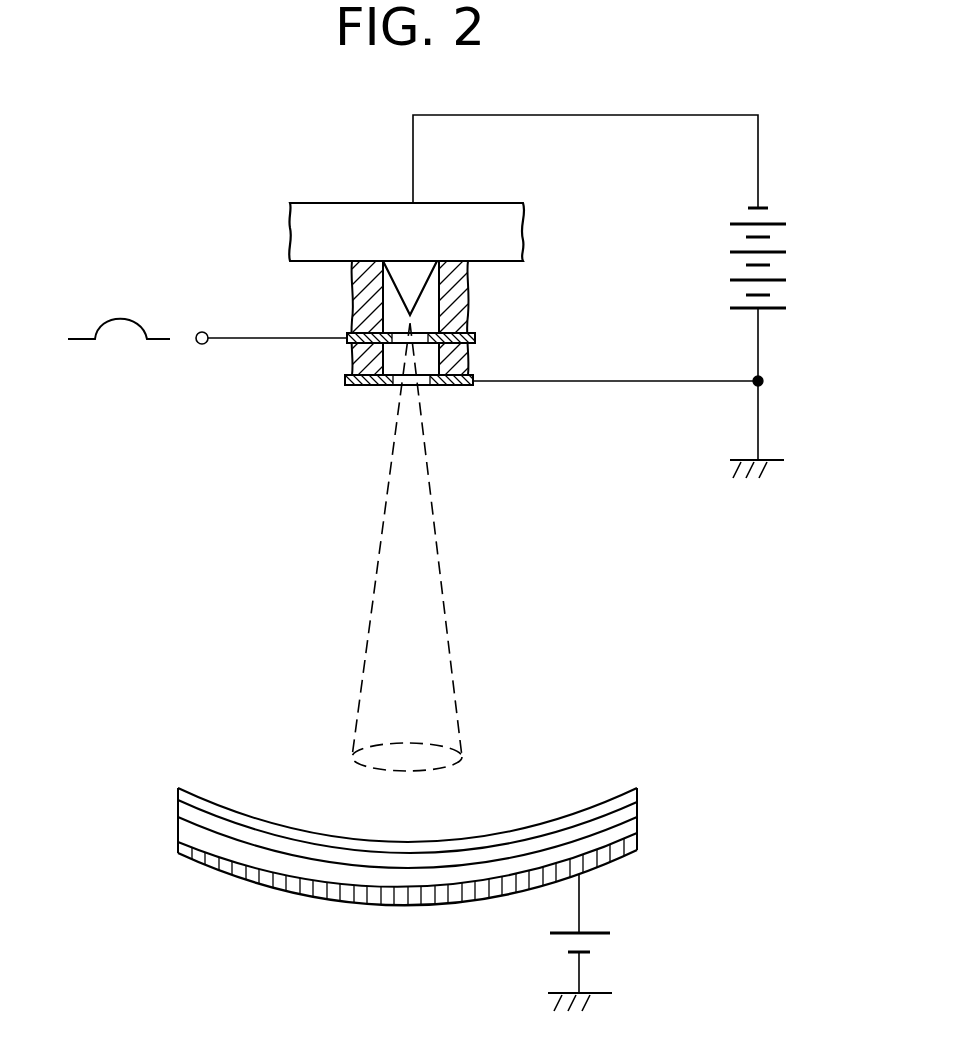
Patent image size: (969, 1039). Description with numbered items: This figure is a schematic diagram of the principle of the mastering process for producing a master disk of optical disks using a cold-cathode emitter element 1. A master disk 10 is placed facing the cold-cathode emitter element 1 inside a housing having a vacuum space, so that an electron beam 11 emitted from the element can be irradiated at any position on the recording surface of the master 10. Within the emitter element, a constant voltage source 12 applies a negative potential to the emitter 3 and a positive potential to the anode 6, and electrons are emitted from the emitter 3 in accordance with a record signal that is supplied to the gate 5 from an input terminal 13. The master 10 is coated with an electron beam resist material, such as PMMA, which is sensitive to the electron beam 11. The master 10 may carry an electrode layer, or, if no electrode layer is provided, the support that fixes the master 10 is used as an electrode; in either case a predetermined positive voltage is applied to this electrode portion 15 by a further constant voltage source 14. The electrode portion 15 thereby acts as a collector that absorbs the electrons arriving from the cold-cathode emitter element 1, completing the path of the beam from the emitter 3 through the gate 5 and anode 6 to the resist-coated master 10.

The cold-cathode emitter element 1 is at (538, 219).
The emitter 3 is at (421, 286).
The gate 5 is at (347, 336).
The anode 6 is at (474, 378).
The master disk 10 is at (615, 788).
The electron beam 11 is at (440, 648).
The constant voltage source 12 is at (790, 246).
The input terminal 13 is at (202, 331).
The constant voltage source 14 is at (610, 950).
The electrode portion 15 is at (638, 838).